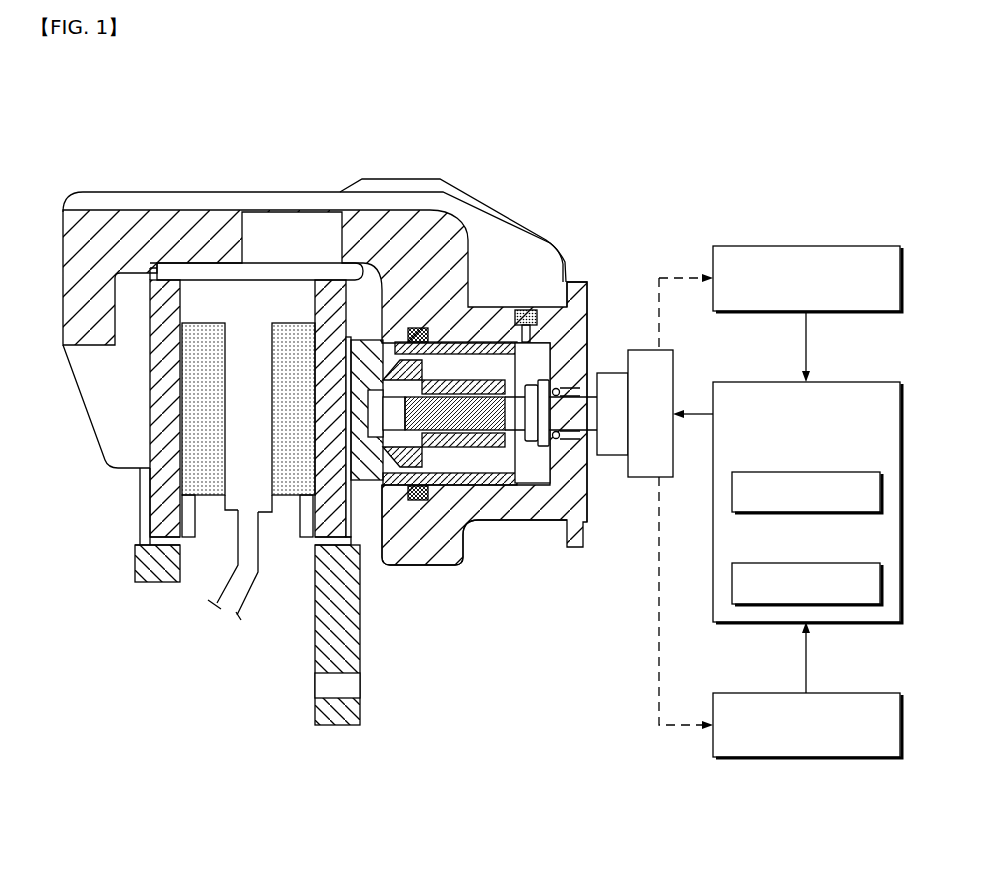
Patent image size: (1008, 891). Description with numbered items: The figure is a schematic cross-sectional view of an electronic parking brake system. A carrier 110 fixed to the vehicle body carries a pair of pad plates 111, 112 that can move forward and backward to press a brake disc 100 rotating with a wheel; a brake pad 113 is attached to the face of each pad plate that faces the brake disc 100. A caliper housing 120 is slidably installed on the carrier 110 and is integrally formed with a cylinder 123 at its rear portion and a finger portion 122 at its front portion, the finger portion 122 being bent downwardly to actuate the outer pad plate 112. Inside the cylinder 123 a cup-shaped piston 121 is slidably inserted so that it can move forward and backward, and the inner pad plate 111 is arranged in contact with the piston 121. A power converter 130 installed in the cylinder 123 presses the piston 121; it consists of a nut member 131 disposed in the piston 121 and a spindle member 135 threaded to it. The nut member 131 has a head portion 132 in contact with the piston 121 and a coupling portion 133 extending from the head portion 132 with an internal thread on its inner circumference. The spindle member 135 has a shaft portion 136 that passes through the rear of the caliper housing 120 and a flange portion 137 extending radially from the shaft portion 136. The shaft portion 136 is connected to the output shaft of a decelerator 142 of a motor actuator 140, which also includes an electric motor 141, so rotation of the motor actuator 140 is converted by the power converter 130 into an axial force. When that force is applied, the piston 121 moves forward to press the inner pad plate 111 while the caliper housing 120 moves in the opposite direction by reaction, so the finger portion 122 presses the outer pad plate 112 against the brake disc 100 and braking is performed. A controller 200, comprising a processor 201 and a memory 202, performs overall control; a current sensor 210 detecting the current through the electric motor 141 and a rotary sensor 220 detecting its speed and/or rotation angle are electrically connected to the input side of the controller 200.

The brake disc 100 is at (240, 598).
The carrier 110 is at (320, 658).
The inner pad plate 111 is at (313, 538).
The outer pad plate 112 is at (158, 493).
The brake pad 113 is at (208, 497).
The caliper housing 120 is at (233, 200).
The piston 121 is at (360, 482).
The finger portion 122 is at (87, 388).
The cylinder 123 is at (576, 282).
The power converter 130 is at (475, 352).
The nut member 131 is at (470, 652).
The head portion 132 is at (385, 468).
The coupling portion 133 is at (463, 447).
The spindle member 135 is at (605, 623).
The shaft portion 136 is at (557, 440).
The flange portion 137 is at (528, 448).
The motor actuator 140 is at (652, 306).
The electric motor 141 is at (651, 356).
The decelerator 142 is at (618, 373).
The controller 200 is at (880, 382).
The processor 201 is at (860, 472).
The memory 202 is at (860, 563).
The current sensor 210 is at (880, 693).
The rotary sensor 220 is at (880, 246).